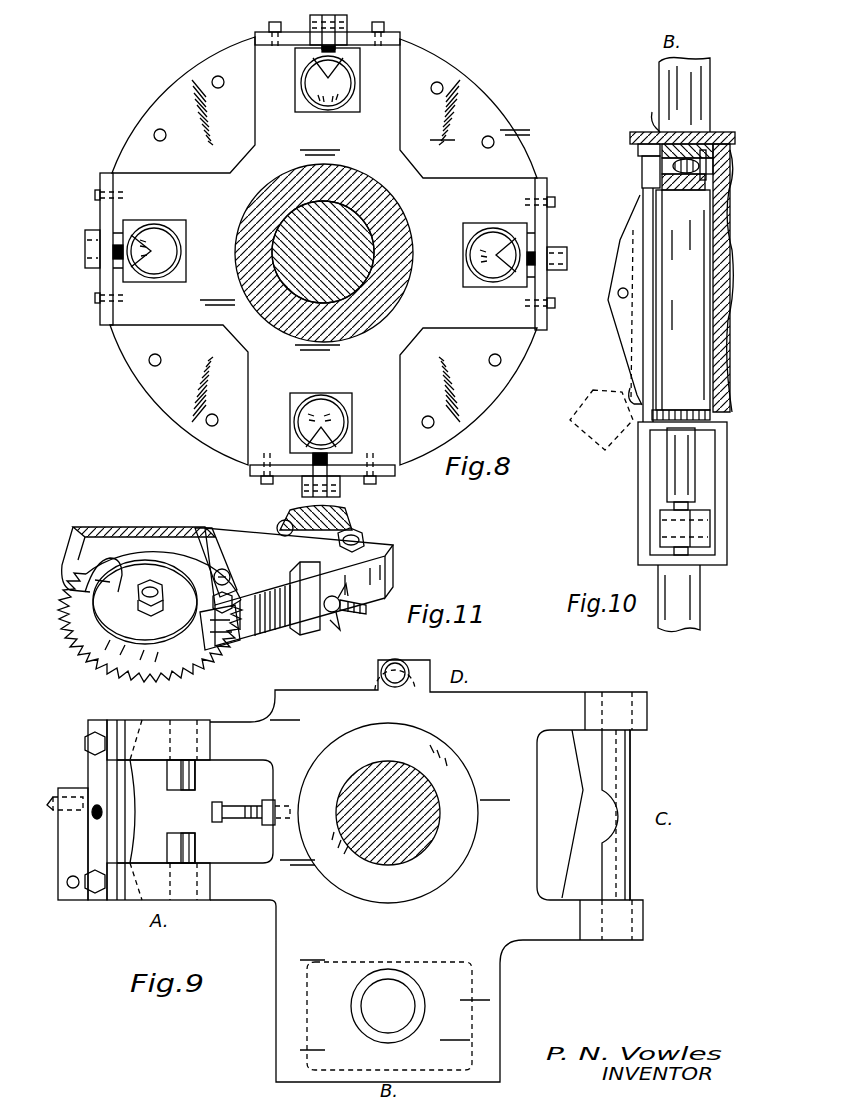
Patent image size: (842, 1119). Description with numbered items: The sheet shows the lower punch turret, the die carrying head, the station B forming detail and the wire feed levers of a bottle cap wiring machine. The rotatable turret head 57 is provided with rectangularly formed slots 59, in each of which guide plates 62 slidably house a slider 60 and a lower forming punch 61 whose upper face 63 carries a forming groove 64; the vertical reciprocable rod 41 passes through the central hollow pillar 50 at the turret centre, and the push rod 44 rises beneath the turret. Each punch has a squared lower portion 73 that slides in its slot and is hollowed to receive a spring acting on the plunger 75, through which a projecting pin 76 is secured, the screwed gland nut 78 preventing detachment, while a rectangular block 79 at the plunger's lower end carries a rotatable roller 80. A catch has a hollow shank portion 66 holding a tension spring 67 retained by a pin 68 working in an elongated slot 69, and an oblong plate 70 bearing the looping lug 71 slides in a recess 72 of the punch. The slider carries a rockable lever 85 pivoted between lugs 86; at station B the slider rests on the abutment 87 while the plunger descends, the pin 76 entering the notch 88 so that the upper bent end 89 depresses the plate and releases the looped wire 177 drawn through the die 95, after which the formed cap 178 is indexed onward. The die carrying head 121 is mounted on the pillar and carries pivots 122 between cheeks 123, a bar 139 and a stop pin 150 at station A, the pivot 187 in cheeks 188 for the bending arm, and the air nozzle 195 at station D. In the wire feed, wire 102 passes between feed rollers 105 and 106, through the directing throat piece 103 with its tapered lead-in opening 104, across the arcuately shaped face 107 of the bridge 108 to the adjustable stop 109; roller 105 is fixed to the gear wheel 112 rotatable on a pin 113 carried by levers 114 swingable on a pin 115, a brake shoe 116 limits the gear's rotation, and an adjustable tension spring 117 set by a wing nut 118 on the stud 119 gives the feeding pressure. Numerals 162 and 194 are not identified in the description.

In FIG. 8, the vertical reciprocable rod 41 is at (330, 279).
In FIG. 9, the vertical reciprocable rod 41 is at (420, 826).
In FIG. 10, the push rod 44 is at (680, 612).
In FIG. 8, the central hollow pillar 50 is at (352, 323).
In FIG. 9, the central hollow pillar 50 is at (447, 855).
In FIG. 8, the turret head 57 is at (423, 196).
In FIG. 8, the rectangularly formed slots 59 is at (336, 113).
In FIG. 8, the slider 60 is at (351, 42).
In FIG. 10, the slider 60 is at (648, 345).
In FIG. 8, the lower forming punch 61 is at (305, 98).
In FIG. 10, the lower forming punch 61 is at (699, 230).
In FIG. 8, the guide plates 62 is at (255, 36).
In FIG. 8, the upper faces of the forming punches 63 is at (327, 96).
In FIG. 8, the forming grooves 64 is at (313, 73).
In FIG. 10, the hollow shank portion 66 is at (682, 145).
In FIG. 10, the tension spring 67 is at (688, 152).
In FIG. 10, the pin 68 is at (704, 153).
In FIG. 10, the elongated slot 69 is at (706, 162).
In FIG. 10, the oblong plate 70 is at (655, 181).
In FIG. 10, the looping lug 71 is at (650, 172).
In FIG. 10, the recess 72 is at (650, 155).
In FIG. 10, the lower squared portion of punch 73 is at (683, 300).
In FIG. 10, the plunger 75 is at (682, 466).
In FIG. 10, the projecting pin 76 is at (655, 410).
In FIG. 10, the screwed gland nut 78 is at (672, 422).
In FIG. 10, the rectangular block 79 is at (665, 513).
In FIG. 10, the rotatable roller 80 is at (700, 530).
In FIG. 8, the rockable lever 85 is at (327, 31).
In FIG. 10, the rockable lever 85 is at (632, 370).
In FIG. 8, the lugs 86 is at (312, 17).
In FIG. 10, the lugs 86 is at (628, 332).
In FIG. 10, the abutment 87 is at (651, 428).
In FIG. 10, the notch 88 is at (630, 393).
In FIG. 8, the upper bent end 89 is at (337, 50).
In FIG. 10, the upper bent end 89 is at (658, 186).
In FIG. 10, the die 95 is at (646, 134).
In FIG. 11, the wire 102 is at (88, 552).
In FIG. 11, the directing throat piece 103 is at (166, 560).
In FIG. 11, the tapered lead-in opening 104 is at (155, 578).
In FIG. 11, the feed roller 105 is at (122, 596).
In FIG. 11, the feed roller 106 is at (111, 560).
In FIG. 11, the arcuately shaped face 107 is at (232, 558).
In FIG. 11, the bridge 108 is at (290, 516).
In FIG. 9, the bridge 108 is at (83, 900).
In FIG. 11, the adjustable stop 109 is at (300, 531).
In FIG. 11, the gear wheel 112 is at (87, 638).
In FIG. 11, the pin 113 is at (145, 608).
In FIG. 11, the levers 114 is at (264, 612).
In FIG. 11, the pin 115 is at (370, 540).
In FIG. 11, the brake shoe 116 is at (216, 645).
In FIG. 11, the adjustable tension spring 117 is at (310, 630).
In FIG. 11, the wing nut 118 is at (336, 625).
In FIG. 11, the stud 119 is at (352, 620).
In FIG. 9, the die carrying head 121 is at (470, 706).
In FIG. 9, the pivots 122 is at (178, 840).
In FIG. 9, the cheeks 123 is at (213, 868).
In FIG. 9, the bar 139 is at (97, 824).
In FIG. 9, the stop pin 150 is at (258, 815).
In FIG. 10, the shaft 162 is at (672, 76).
In FIG. 10, the looped wire 177 is at (640, 148).
In FIG. 10, the formed cap 178 is at (684, 95).
In FIG. 9, the pivot 187 is at (626, 792).
In FIG. 9, the cheeks 188 is at (583, 815).
In FIG. 10, the key 194 is at (653, 120).
In FIG. 9, the air nozzle 195 is at (412, 666).